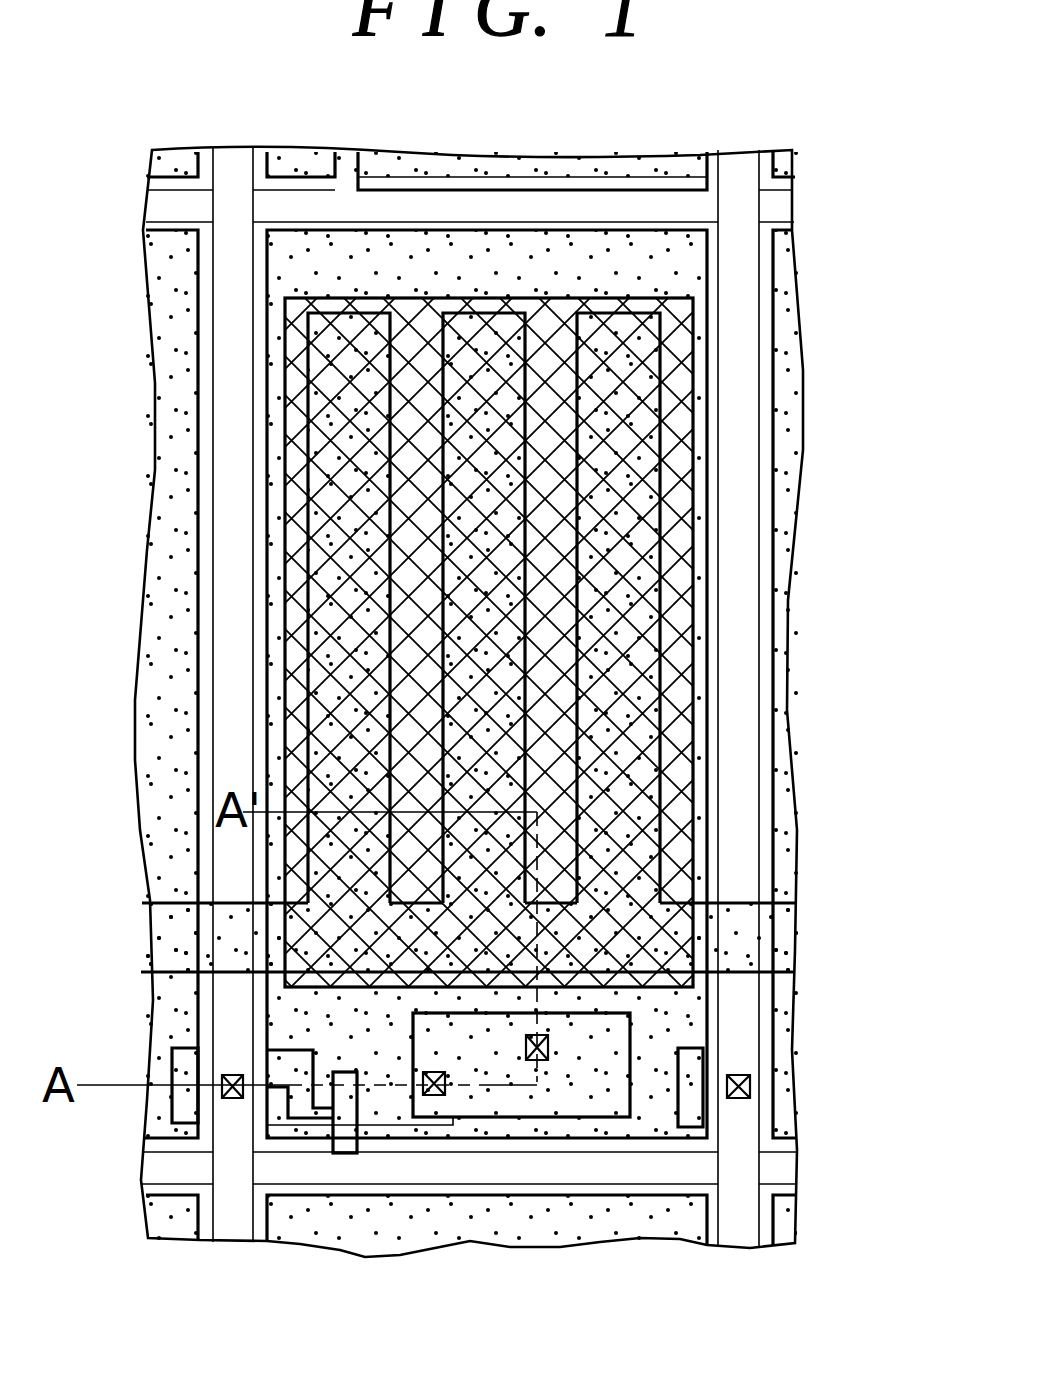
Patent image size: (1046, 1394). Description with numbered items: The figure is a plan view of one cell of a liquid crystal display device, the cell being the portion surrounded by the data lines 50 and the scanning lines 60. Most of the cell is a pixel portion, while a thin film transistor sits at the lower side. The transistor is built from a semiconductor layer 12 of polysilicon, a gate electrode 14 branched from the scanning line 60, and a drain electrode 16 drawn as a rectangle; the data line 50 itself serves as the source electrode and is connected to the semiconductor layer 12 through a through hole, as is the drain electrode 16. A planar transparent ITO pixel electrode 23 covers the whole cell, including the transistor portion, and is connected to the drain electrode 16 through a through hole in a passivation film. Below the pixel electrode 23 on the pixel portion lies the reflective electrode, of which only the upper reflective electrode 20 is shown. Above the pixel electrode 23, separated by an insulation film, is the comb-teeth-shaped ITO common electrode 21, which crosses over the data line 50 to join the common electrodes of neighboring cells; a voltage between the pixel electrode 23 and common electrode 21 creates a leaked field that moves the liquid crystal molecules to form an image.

The semiconductor layer 12 is at (295, 1127).
The gate electrode 14 is at (347, 1087).
The drain electrode 16 is at (570, 1117).
The upper reflective electrode 20 is at (695, 463).
The common electrode 21 is at (665, 560).
The pixel electrode 23 is at (672, 1018).
The data line 50 is at (233, 1212).
The scanning line 60 is at (163, 1167).